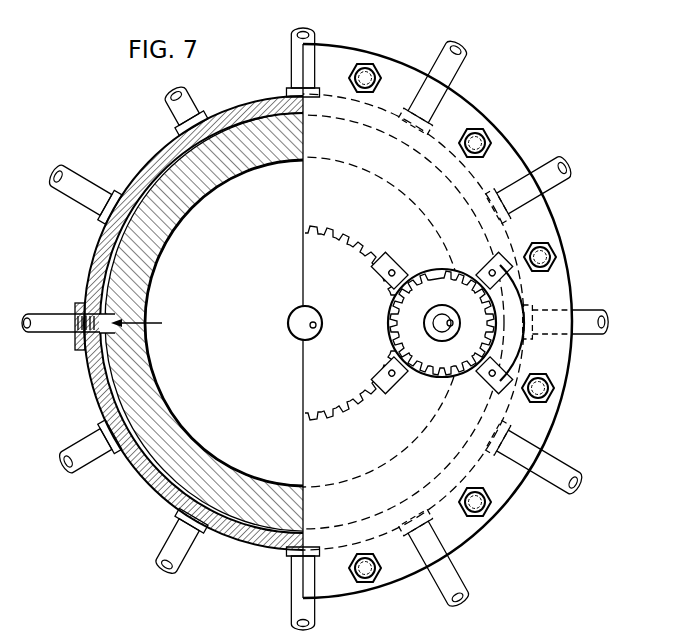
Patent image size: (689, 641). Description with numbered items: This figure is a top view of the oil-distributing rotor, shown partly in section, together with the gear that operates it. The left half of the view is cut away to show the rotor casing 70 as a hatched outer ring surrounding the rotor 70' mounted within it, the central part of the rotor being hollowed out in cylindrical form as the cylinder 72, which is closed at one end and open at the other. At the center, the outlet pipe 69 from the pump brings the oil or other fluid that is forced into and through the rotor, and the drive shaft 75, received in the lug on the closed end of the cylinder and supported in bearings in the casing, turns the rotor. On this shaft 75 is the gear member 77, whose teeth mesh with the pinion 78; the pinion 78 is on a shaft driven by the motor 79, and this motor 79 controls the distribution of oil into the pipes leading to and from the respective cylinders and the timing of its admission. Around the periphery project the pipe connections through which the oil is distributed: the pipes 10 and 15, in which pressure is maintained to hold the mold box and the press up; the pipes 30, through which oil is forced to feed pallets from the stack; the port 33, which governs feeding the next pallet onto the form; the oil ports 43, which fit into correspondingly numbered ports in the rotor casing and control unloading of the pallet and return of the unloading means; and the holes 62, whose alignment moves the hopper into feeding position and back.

The pipe 10 is at (592, 313).
The pipe 15 is at (68, 448).
The pipes 30 is at (460, 60).
The port 33 is at (188, 98).
The oil ports 43 is at (80, 176).
The hole 62 is at (565, 462).
The outlet pipe 69 is at (289, 320).
The rotor casing 70 is at (303, 323).
The rotor 70' is at (305, 322).
The hollowed-out cylindrical central part 72 is at (165, 372).
The drive shaft 75 is at (319, 330).
The gear member 77 is at (341, 410).
The pinion 78 is at (418, 378).
The motor 79 is at (470, 378).